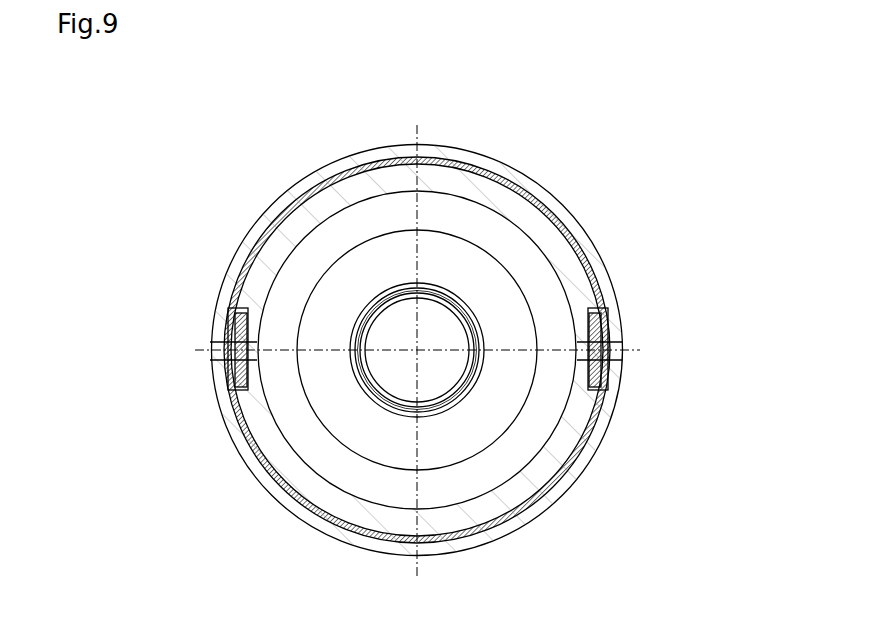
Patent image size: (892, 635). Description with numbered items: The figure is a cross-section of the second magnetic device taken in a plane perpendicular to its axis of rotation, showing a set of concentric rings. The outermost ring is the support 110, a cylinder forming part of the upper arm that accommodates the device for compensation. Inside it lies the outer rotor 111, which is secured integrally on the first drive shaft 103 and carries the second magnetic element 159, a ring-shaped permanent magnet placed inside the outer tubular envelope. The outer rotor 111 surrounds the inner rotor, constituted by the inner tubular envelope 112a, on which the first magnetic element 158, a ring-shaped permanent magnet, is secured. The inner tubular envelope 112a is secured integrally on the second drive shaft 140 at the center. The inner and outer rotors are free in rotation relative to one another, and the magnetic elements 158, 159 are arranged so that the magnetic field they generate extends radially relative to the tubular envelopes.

The support 110 is at (360, 160).
The outer rotor 111 is at (350, 497).
The inner tubular envelope 112a is at (367, 393).
The first drive shaft 103 is at (520, 207).
The first magnetic element 158 is at (483, 295).
The second magnetic element 159 is at (438, 207).
The second drive shaft 140 is at (473, 383).